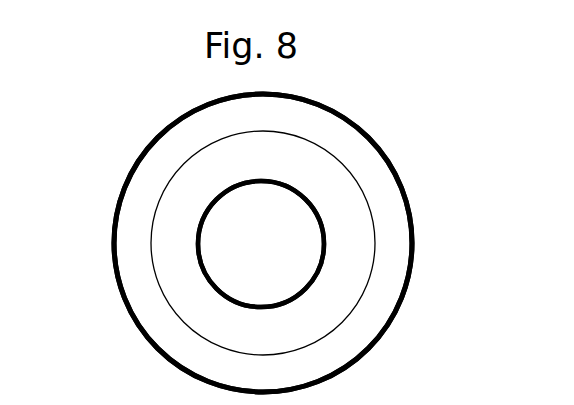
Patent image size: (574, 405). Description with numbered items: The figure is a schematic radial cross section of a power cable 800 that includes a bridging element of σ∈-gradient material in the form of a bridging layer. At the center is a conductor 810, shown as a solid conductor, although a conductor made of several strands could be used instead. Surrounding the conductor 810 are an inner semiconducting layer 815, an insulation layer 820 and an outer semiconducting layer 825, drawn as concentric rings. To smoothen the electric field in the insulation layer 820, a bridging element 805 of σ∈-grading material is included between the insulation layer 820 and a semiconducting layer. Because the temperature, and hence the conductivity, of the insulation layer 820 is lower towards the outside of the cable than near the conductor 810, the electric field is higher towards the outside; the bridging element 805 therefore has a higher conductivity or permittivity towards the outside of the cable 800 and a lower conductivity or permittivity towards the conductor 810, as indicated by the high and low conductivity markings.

The power cable 800 is at (442, 375).
The bridging element 805 is at (263, 243).
The conductor 810 is at (261, 244).
The inner semiconducting layer 815 is at (322, 222).
The insulation layer 820 is at (263, 243).
The outer semiconducting layer 825 is at (413, 266).